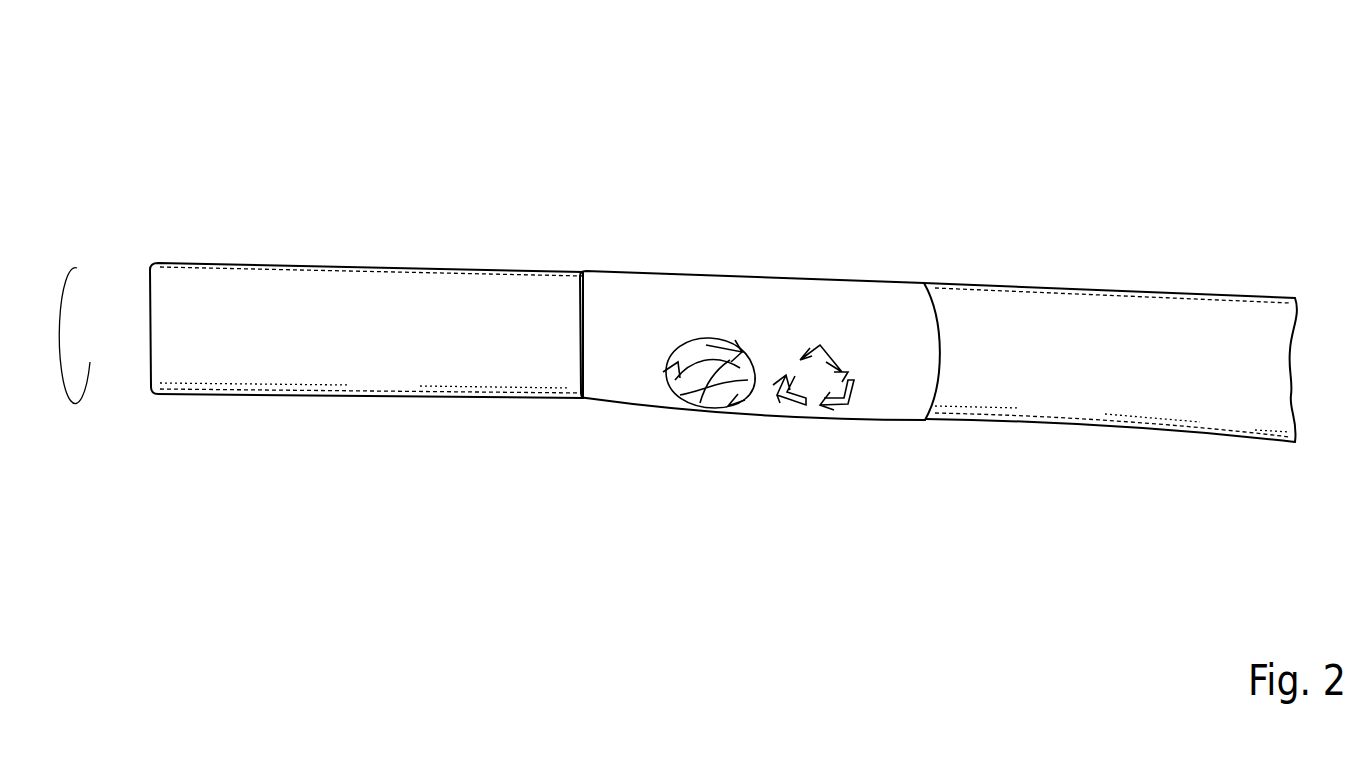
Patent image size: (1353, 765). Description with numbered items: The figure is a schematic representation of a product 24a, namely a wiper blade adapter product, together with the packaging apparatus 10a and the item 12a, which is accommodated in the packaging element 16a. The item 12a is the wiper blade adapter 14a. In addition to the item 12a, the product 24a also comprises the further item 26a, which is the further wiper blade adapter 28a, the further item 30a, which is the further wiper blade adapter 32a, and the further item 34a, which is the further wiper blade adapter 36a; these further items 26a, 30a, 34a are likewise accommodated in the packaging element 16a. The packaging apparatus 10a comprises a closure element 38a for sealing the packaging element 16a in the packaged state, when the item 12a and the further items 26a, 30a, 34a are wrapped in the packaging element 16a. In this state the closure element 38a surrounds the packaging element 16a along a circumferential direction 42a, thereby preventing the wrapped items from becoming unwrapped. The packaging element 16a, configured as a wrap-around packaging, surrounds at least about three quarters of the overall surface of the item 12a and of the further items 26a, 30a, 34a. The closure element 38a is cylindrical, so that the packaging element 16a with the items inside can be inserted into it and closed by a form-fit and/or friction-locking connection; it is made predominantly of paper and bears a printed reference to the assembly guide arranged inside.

The packaging apparatus 10a is at (600, 193).
The item 12a is at (263, 308).
The wiper blade adapter 14a is at (366, 330).
The packaging element 16a is at (748, 310).
The product 24a is at (1102, 148).
The further item 26a is at (479, 309).
The further wiper blade adapter 28a is at (441, 330).
The further item 30a is at (973, 327).
The further wiper blade adapter 32a is at (1109, 363).
The further item 34a is at (1176, 333).
The further wiper blade adapter 36a is at (1197, 366).
The closure element 38a is at (719, 273).
The circumferential direction 42a is at (90, 309).